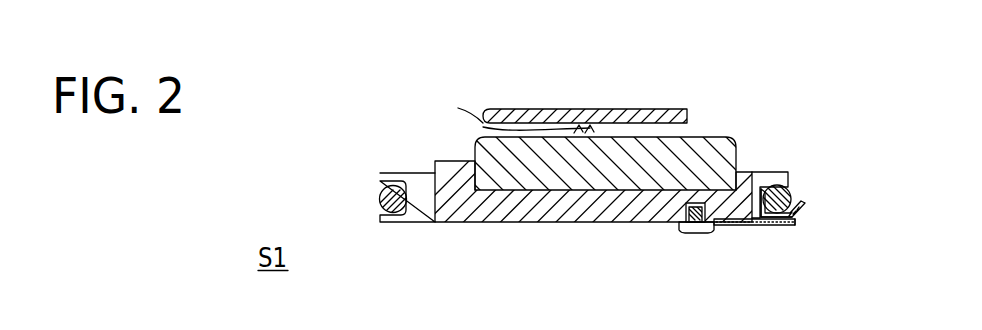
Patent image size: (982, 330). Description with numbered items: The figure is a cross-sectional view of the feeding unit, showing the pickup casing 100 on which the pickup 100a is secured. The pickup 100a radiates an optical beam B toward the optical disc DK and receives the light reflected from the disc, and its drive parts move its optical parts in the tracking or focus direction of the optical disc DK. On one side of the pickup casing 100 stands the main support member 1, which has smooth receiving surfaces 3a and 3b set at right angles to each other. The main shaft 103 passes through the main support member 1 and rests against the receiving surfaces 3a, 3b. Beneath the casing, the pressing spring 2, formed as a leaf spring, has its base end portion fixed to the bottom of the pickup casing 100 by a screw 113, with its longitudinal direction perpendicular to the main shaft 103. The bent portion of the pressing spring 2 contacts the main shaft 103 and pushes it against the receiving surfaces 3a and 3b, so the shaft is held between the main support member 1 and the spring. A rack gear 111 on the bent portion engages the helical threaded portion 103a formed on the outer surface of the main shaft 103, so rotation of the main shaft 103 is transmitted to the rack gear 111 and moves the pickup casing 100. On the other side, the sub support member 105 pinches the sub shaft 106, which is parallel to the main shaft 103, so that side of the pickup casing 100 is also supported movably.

The main support member 1 is at (762, 173).
The pressing spring 2 is at (800, 209).
The receiving surface 3a is at (790, 190).
The receiving surface 3b is at (766, 227).
The pickup casing 100 is at (500, 217).
The pickup 100a is at (718, 143).
The main shaft 103 is at (766, 226).
The threaded portion 103a is at (787, 224).
The sub support member 105 is at (393, 174).
The sub shaft 106 is at (379, 196).
The rack gear 111 is at (790, 196).
The screw 113 is at (680, 232).
The optical beam B is at (513, 113).
The optical disc DK is at (513, 113).